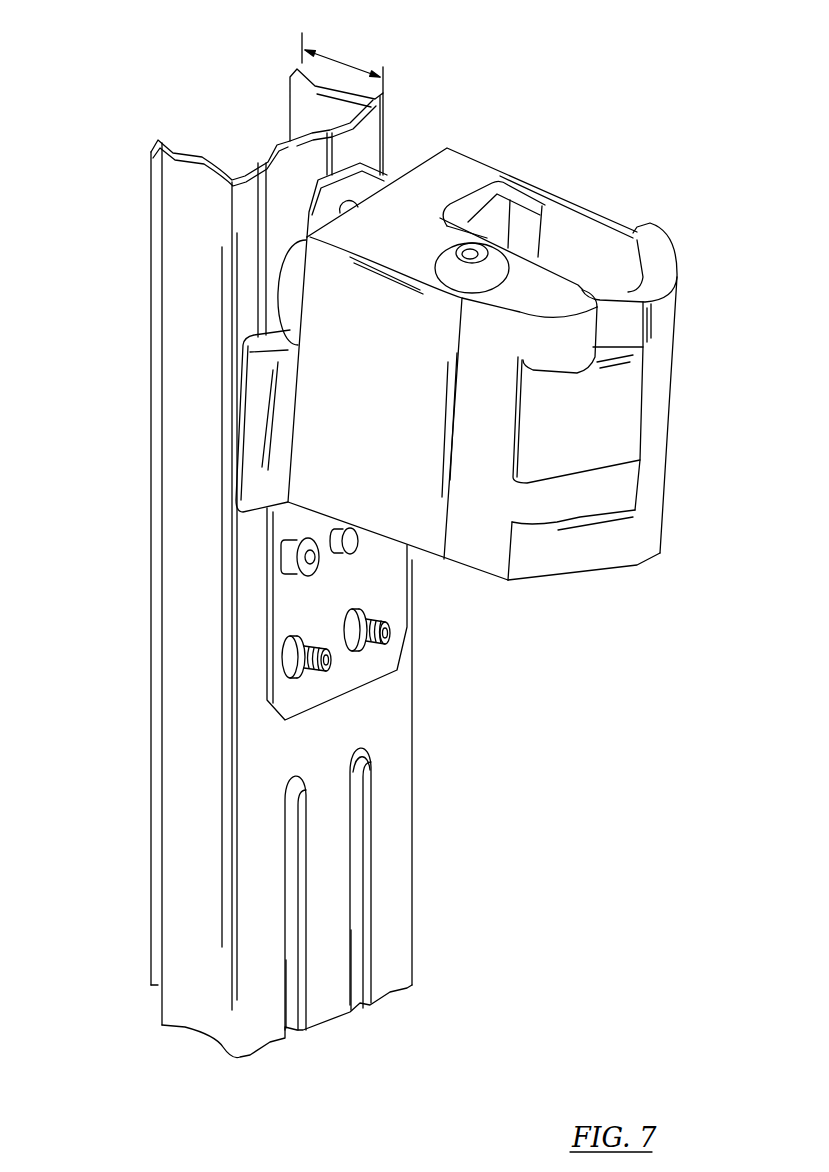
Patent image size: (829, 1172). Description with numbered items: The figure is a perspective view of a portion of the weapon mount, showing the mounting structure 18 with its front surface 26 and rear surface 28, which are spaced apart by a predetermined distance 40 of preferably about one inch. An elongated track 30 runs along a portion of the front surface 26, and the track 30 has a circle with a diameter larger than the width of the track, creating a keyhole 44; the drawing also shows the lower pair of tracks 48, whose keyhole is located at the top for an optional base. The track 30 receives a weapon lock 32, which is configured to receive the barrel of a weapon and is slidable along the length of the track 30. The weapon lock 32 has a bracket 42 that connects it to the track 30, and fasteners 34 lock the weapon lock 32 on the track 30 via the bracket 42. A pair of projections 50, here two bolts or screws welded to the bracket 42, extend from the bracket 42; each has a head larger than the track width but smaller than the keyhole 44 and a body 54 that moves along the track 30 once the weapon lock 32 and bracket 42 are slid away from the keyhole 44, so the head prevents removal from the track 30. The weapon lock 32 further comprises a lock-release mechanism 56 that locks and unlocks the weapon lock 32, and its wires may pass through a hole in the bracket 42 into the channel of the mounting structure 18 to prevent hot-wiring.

The mounting structure 18 is at (180, 222).
The front surface 26 is at (390, 882).
The rear surface 28 is at (158, 443).
The elongated track 30 is at (360, 840).
The weapon lock 32 is at (325, 398).
The fasteners 34 is at (295, 558).
The predetermined distance 40 is at (315, 52).
The bracket 42 is at (300, 620).
The keyhole 44 is at (366, 753).
The lower pair of tracks 48 is at (291, 978).
The projections 50 is at (388, 633).
The body 54 is at (390, 638).
The lock-release mechanism 56 is at (480, 256).